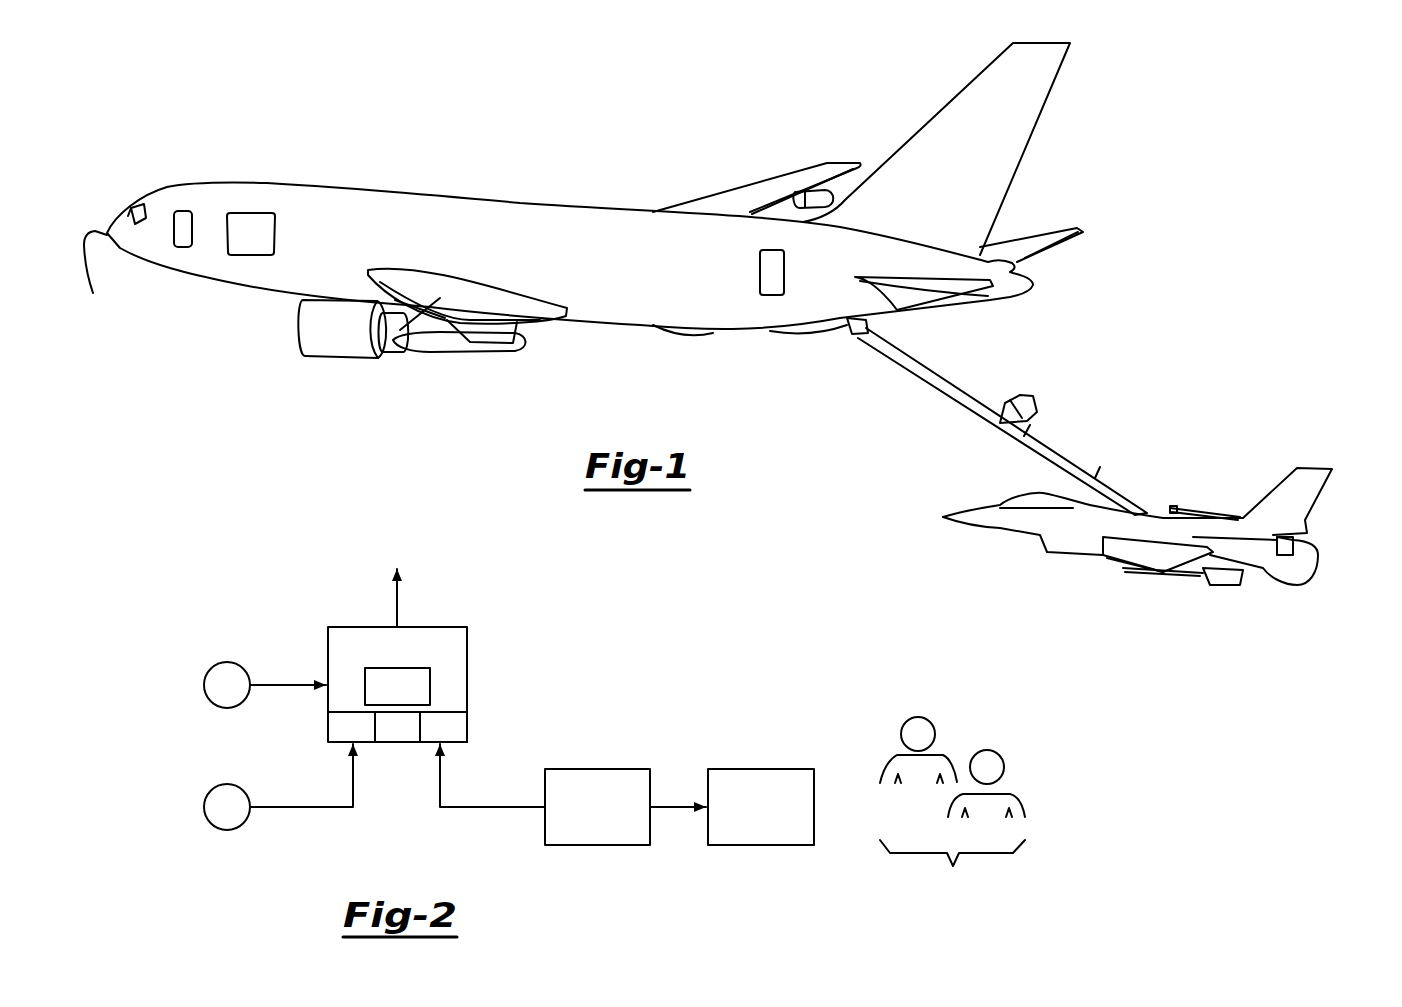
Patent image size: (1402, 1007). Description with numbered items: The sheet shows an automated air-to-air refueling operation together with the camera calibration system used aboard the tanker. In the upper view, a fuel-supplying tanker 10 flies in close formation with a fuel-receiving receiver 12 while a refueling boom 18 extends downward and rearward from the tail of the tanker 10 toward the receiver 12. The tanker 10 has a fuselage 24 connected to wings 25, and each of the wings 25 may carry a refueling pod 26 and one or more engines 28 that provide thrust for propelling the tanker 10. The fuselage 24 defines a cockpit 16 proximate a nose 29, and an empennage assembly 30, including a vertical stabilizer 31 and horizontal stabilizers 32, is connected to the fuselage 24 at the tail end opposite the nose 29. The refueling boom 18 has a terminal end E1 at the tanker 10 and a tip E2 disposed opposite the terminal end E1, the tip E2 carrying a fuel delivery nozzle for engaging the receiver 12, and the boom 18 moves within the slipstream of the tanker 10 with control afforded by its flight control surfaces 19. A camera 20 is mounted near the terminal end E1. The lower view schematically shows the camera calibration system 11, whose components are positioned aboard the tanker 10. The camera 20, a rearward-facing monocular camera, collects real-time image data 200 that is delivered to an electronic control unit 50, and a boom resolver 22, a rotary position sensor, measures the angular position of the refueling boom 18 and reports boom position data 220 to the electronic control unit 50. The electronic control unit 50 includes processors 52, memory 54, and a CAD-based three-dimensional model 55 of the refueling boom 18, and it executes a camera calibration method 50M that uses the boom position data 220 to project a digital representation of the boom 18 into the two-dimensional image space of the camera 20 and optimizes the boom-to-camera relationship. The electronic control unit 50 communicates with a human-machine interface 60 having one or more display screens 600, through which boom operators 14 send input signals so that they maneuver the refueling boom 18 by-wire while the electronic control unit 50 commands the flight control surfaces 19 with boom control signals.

In FIG. 1, the tanker 10 is at (320, 128).
In FIG. 2, the camera calibration system 11 is at (533, 598).
In FIG. 1, the receiver 12 is at (1220, 435).
In FIG. 2, the boom operators 14 is at (952, 811).
In FIG. 1, the cockpit 16 is at (125, 195).
In FIG. 1, the refueling boom 18 is at (933, 398).
In FIG. 1, the flight control surfaces 19 is at (1055, 380).
In FIG. 1, the camera 20 is at (858, 334).
In FIG. 2, the camera 20 is at (178, 685).
In FIG. 2, the boom resolver 22 is at (195, 839).
In FIG. 1, the fuselage 24 is at (455, 212).
In FIG. 1, the wings 25 is at (488, 305).
In FIG. 1, the refueling pod 26 is at (445, 345).
In FIG. 1, the engines 28 is at (328, 333).
In FIG. 1, the nose 29 is at (97, 280).
In FIG. 1, the empennage assembly 30 is at (1135, 97).
In FIG. 1, the vertical stabilizer 31 is at (1003, 155).
In FIG. 1, the horizontal stabilizers 32 is at (1043, 237).
In FIG. 1, the electronic control unit 50 is at (251, 234).
In FIG. 2, the electronic control unit 50 is at (353, 625).
In FIG. 2, the processors 52 is at (358, 727).
In FIG. 2, the memory 54 is at (403, 727).
In FIG. 2, the camera calibration method 50M is at (443, 728).
In FIG. 2, the 3D model 55 is at (430, 687).
In FIG. 2, the human-machine interface 60 is at (598, 768).
In FIG. 2, the display screens 600 is at (763, 768).
In FIG. 2, the real-time image data 200 is at (283, 683).
In FIG. 2, the boom position data 220 is at (293, 805).
In FIG. 1, the terminal end E1 is at (887, 328).
In FIG. 1, the tip E2 is at (1152, 505).